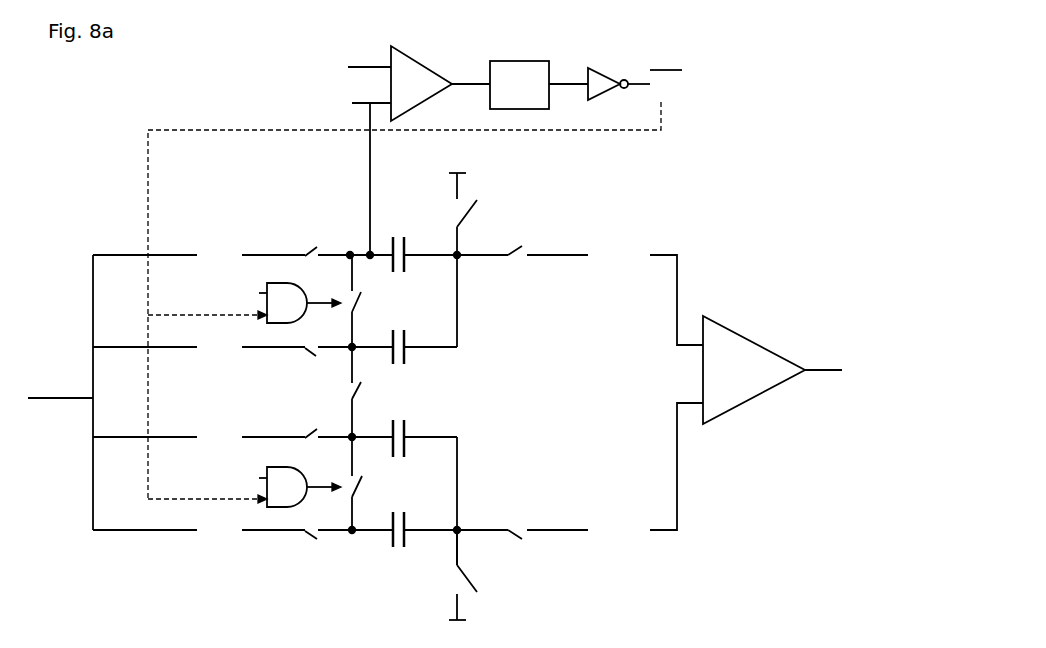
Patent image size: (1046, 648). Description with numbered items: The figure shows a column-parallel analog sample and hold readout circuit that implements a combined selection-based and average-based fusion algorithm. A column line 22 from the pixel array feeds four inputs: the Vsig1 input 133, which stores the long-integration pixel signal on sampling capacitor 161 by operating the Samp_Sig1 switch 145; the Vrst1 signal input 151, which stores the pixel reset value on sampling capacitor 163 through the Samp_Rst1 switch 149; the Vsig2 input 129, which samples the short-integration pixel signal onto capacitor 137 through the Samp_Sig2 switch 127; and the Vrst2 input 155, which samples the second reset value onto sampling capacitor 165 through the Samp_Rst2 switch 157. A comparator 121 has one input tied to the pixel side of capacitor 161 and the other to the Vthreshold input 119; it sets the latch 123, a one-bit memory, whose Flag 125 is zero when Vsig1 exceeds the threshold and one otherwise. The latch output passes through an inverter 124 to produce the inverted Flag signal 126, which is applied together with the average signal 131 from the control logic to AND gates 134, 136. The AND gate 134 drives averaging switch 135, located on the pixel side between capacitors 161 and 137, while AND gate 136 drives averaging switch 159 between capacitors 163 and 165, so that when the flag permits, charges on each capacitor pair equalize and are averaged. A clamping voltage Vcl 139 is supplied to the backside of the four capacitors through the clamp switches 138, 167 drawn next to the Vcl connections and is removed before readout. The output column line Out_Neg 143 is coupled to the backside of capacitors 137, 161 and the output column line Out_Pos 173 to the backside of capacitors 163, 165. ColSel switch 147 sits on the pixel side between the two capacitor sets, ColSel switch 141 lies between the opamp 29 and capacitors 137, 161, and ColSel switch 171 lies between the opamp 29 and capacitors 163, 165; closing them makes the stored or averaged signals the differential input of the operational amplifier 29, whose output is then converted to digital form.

The column line 22 is at (62, 398).
The operational amplifier 29 is at (725, 329).
The Vthreshold input 119 is at (268, 67).
The comparator 121 is at (433, 68).
The latch 123 is at (549, 70).
The inverter 124 is at (610, 68).
The Flag 125 is at (568, 84).
The Flag signal 126 is at (685, 84).
The Samp_Sig2 switch 127 is at (270, 367).
The Vsig2 input 129 is at (197, 347).
The average signal 131 is at (202, 293).
The Vsig1 input 133 is at (195, 255).
The AND gate 134 is at (292, 324).
The averaging switch 135 is at (342, 297).
The AND gate 136 is at (291, 507).
The capacitor 137 is at (407, 360).
The ColClamp switch 138 is at (440, 207).
The clamping voltage Vcl 139 is at (466, 172).
The ColSel switch 141 is at (545, 228).
The Out_Neg 143 is at (612, 248).
The Samp_Sig1 switch 145 is at (272, 229).
The ColSel switch 147 is at (355, 398).
The Samp_Rst1 switch 149 is at (315, 561).
The Vrst1 signal input 151 is at (208, 531).
The Vrst2 input 155 is at (212, 437).
The Samp_Rst2 switch 157 is at (268, 421).
The averaging switch 159 is at (341, 484).
The sampling capacitor 161 is at (406, 272).
The sampling capacitor 163 is at (406, 517).
The sampling capacitor 165 is at (406, 433).
The ColClamp switch 167 is at (410, 588).
The ColSel switch 171 is at (532, 567).
The Out_Pos 173 is at (612, 522).